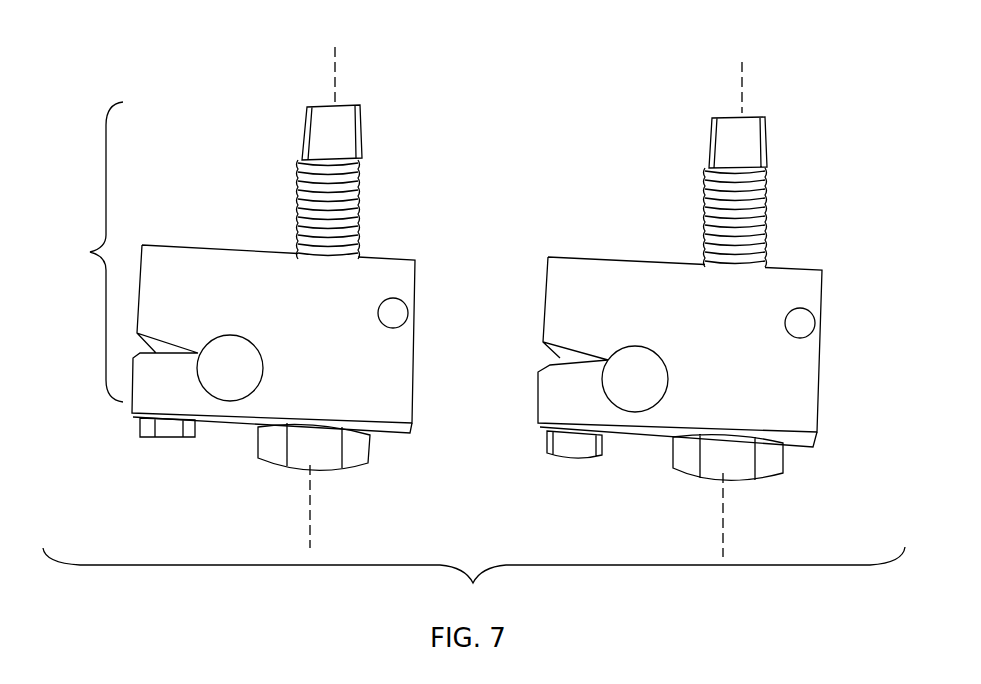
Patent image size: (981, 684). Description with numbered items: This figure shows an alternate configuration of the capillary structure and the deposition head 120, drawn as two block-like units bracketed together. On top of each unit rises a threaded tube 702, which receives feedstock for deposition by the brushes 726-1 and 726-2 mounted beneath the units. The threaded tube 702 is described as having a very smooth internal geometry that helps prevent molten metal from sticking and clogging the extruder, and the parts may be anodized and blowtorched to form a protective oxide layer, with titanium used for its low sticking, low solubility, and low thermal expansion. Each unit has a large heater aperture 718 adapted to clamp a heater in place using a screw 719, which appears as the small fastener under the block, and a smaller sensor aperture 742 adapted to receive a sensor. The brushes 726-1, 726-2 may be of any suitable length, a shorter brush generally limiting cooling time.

The deposition head 120 is at (87, 252).
The threaded tube 702 is at (353, 172).
The sensor aperture 742 is at (395, 313).
The heater aperture 718 is at (233, 378).
The screw 719 is at (163, 438).
The brush 726-2 is at (312, 506).
The brush 726-1 is at (725, 518).